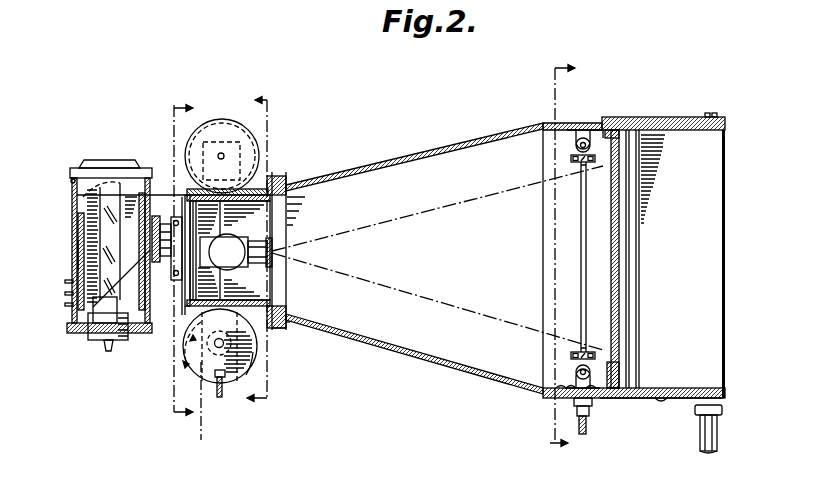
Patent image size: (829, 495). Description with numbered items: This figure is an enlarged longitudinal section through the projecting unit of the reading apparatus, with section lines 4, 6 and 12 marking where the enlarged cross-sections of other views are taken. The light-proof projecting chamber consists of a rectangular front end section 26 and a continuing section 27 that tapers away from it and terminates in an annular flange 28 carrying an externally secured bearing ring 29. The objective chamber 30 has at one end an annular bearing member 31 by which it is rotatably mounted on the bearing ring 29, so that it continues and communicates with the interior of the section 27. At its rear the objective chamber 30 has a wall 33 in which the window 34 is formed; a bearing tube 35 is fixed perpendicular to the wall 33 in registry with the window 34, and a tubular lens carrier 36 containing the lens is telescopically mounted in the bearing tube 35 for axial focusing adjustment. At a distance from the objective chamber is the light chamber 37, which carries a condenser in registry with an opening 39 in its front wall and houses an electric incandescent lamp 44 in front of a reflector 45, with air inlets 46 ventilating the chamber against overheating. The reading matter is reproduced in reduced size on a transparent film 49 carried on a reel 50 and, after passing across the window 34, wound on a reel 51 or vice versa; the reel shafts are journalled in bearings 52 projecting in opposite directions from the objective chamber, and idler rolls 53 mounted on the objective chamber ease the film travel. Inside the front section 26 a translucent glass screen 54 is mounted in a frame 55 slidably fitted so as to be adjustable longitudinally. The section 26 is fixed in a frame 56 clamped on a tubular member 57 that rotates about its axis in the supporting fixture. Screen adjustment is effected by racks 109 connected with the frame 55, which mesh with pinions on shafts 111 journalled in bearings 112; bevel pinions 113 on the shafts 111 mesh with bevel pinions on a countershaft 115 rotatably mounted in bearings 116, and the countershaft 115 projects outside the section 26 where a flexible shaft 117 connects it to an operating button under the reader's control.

The section line 4— 4 is at (179, 258).
The section line 6— 6 is at (259, 252).
The section line 12— 12 is at (561, 255).
The front end section 26 is at (634, 257).
The continuing section 27 is at (411, 350).
The annular flange 28 is at (288, 310).
The bearing ring 29 is at (289, 323).
The objective chamber 30 is at (252, 192).
The annular bearing member 31 is at (281, 330).
The wall 33 is at (182, 205).
The window 34 is at (172, 298).
The bearing tube 35 is at (238, 240).
The tubular lens carrier 36 is at (274, 249).
The light chamber 37 is at (72, 226).
The opening 39 is at (72, 331).
The electric incandescent lamp 44 is at (76, 186).
The reflector 45 is at (77, 252).
The air inlets 46 is at (65, 304).
The transparent film 49 is at (185, 372).
The reel 50 is at (222, 122).
The reel 51 is at (248, 372).
The bearings 52 is at (240, 142).
The idler rolls 53 is at (198, 192).
The screen 54 is at (618, 256).
The frame 55 is at (633, 224).
The frame 56 is at (634, 400).
The tubular member 57 is at (720, 432).
The racks 109 is at (567, 133).
The shafts 111 is at (596, 130).
The bearings 112 is at (571, 130).
The bevel pinions 113 is at (572, 158).
The countershaft 115 is at (581, 263).
The bearings 116 is at (581, 168).
The flexible shaft 117 is at (586, 435).